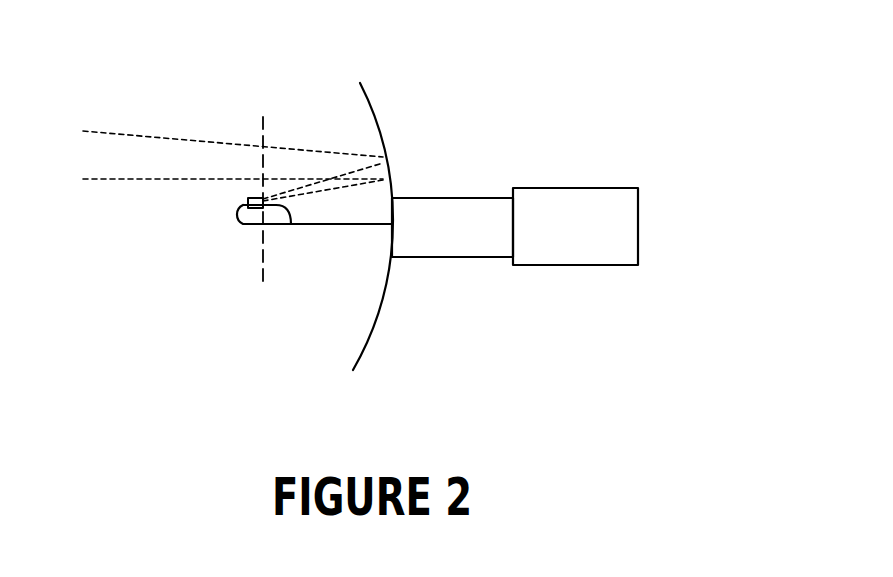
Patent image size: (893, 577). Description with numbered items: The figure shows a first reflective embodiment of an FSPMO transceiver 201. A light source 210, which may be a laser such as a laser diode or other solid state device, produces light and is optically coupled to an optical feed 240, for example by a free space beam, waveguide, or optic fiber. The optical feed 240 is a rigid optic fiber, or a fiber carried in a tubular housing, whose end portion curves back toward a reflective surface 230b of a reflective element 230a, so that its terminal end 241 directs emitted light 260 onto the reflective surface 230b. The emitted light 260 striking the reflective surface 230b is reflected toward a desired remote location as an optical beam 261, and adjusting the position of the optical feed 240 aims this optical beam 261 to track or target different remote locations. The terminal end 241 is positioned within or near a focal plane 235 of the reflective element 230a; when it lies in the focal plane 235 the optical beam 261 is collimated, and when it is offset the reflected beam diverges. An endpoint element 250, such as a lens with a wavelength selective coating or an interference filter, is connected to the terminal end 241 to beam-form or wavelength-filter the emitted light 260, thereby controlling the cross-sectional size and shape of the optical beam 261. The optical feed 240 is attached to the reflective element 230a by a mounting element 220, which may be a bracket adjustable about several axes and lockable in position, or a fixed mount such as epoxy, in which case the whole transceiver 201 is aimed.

The FSPMO transceiver 201 is at (551, 93).
The light source 210 is at (637, 190).
The mounting element 220 is at (455, 198).
The reflective element 230a is at (380, 322).
The reflective surface 230b is at (357, 86).
The focal plane 235 is at (263, 285).
The optical feed 240 is at (263, 225).
The terminal end 241 is at (290, 226).
The endpoint element 250 is at (254, 199).
The emitted light 260 is at (358, 180).
The optical beam 261 is at (167, 172).